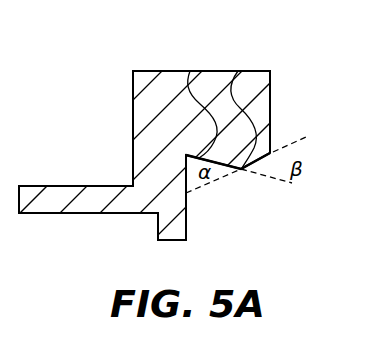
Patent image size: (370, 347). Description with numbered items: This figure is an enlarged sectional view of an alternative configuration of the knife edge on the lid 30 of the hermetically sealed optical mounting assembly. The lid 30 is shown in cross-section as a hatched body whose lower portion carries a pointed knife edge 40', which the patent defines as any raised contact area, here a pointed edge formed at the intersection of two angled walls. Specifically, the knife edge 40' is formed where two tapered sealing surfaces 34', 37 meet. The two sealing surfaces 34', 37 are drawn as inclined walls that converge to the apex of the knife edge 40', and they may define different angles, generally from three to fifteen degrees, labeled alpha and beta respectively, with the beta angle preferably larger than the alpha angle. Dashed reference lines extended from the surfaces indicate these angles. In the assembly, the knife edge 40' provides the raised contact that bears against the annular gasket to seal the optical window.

The lid 30 is at (152, 80).
The tapered sealing surface 34' is at (213, 92).
The tapered sealing surface 37 is at (238, 72).
The knife edge 40' is at (228, 195).